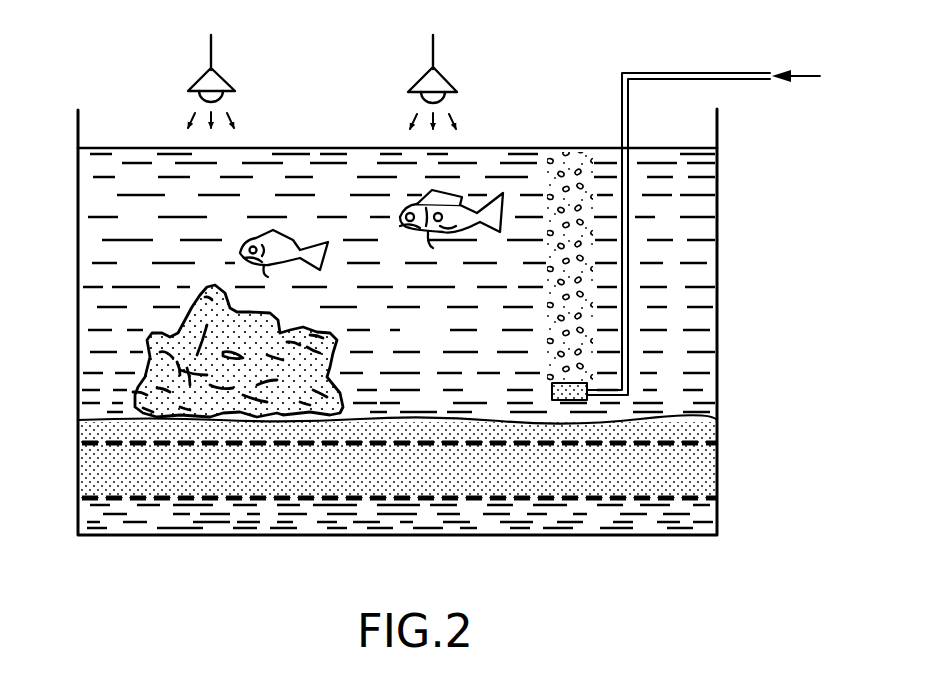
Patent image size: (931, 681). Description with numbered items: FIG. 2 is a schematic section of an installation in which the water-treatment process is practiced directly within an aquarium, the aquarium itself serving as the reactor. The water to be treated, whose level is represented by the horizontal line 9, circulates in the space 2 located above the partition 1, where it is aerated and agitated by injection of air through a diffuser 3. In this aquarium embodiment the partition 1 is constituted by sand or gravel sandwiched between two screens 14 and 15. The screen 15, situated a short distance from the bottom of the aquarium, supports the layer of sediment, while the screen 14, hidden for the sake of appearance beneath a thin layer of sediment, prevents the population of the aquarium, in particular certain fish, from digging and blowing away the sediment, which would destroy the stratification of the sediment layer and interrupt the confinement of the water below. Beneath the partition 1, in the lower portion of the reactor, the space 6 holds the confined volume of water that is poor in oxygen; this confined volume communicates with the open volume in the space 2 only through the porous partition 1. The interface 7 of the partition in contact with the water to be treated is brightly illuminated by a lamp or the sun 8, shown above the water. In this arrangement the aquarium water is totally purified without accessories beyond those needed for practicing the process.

The partition 1 is at (593, 475).
The space 2 is at (121, 182).
The diffuser 3 is at (580, 399).
The space 6 is at (662, 522).
The interface (wall) of the partition 7 is at (108, 500).
The lamp or the sun 8 is at (212, 85).
The horizontal line 9 is at (331, 147).
The screen 14 is at (473, 447).
The screen 15 is at (263, 500).